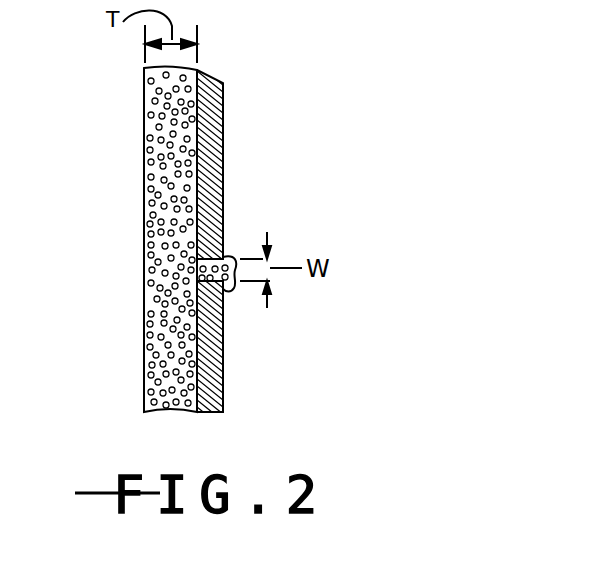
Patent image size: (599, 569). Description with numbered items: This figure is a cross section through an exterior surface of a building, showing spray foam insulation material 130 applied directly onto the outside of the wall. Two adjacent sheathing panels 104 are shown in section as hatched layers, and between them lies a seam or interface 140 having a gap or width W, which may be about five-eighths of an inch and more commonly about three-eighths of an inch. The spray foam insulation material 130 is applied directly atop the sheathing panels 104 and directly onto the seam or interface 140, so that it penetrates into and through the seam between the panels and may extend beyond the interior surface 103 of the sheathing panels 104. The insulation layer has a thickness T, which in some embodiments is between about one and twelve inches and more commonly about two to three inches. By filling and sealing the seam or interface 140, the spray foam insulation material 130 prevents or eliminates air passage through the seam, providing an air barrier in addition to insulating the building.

The interior surface 103 is at (223, 190).
The sheathing panels 104 is at (215, 135).
The spray foam insulation material 130 is at (145, 222).
The seam or interface 140 is at (205, 258).